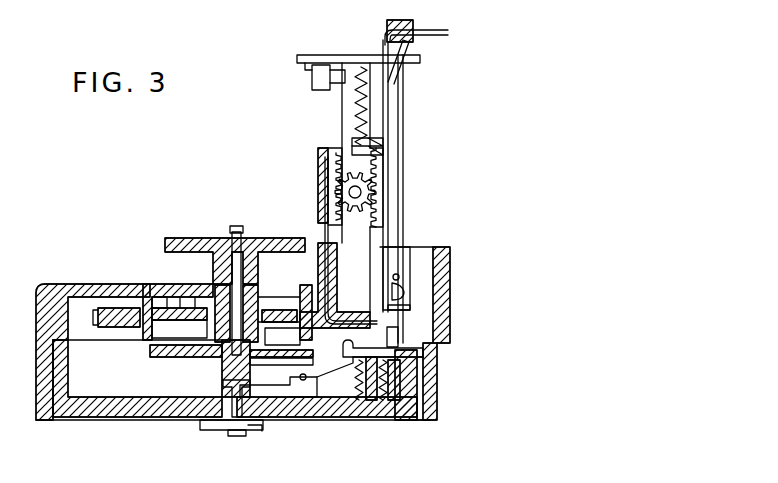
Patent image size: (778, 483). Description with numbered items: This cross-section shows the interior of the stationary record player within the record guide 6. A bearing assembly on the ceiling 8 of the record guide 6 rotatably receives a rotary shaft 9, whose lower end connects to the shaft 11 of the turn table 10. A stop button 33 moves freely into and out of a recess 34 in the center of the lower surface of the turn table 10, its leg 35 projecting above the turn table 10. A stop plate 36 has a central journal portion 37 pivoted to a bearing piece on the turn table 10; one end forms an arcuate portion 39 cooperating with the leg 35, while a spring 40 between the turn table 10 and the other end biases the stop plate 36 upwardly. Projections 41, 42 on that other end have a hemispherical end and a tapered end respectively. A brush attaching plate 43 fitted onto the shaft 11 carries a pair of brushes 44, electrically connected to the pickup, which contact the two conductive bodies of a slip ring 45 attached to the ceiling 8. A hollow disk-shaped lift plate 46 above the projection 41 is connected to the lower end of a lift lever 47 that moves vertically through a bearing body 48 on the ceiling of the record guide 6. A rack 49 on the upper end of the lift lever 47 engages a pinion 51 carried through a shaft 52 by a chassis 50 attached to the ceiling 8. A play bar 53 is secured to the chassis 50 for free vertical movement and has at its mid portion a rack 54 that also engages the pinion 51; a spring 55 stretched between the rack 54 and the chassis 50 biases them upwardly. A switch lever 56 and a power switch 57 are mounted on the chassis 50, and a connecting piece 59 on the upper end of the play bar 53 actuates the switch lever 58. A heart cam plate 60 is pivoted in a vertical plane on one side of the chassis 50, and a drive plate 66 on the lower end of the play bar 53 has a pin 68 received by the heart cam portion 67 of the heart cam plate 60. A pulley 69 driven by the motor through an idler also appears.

The record guide 6 is at (36, 331).
The ceiling 8 is at (153, 284).
The rotary shaft 9 is at (236, 226).
The turn table 10 is at (104, 410).
The shaft 11 is at (222, 372).
The stop button 33 is at (210, 430).
The recess 34 is at (256, 431).
The leg 35 is at (232, 436).
The stop plate 36 is at (330, 365).
The central journal portion 37 is at (303, 380).
The arcuate portion 39 is at (223, 385).
The spring 40 is at (398, 400).
The projection 41 is at (400, 356).
The projection 42 is at (403, 350).
The brush attaching plate 43 is at (150, 350).
The brushes 44 is at (283, 328).
The slip ring 45 is at (193, 318).
The lift plate 46 is at (98, 314).
The lift lever 47 is at (323, 236).
The bearing body 48 is at (337, 266).
The rack 49 is at (322, 148).
The chassis 50 is at (400, 112).
The pinion 51 is at (366, 186).
The shaft 52 is at (362, 192).
The play bar 53 is at (400, 92).
The rack 54 is at (380, 149).
The spring 55 is at (352, 108).
The switch lever 56 is at (340, 55).
The power switch 57 is at (312, 82).
The switch lever 58 is at (410, 48).
The connecting piece 59 is at (405, 22).
The heart cam plate 60 is at (398, 257).
The drive plate 66 is at (395, 307).
The heart cam portion 67 is at (405, 292).
The pin 68 is at (400, 277).
The pulley 69 is at (196, 238).